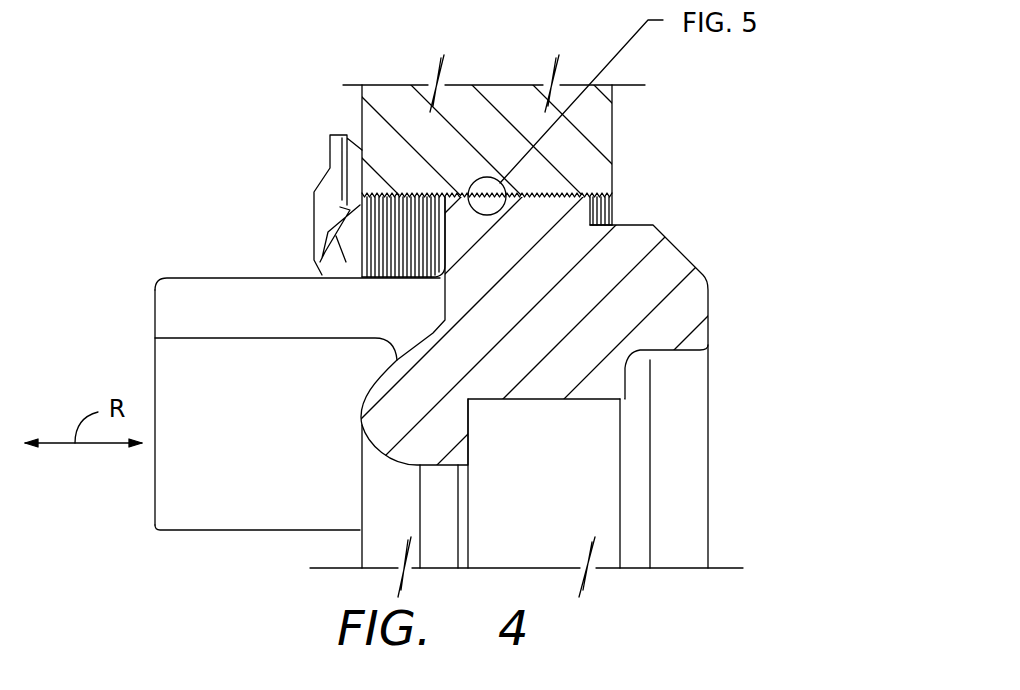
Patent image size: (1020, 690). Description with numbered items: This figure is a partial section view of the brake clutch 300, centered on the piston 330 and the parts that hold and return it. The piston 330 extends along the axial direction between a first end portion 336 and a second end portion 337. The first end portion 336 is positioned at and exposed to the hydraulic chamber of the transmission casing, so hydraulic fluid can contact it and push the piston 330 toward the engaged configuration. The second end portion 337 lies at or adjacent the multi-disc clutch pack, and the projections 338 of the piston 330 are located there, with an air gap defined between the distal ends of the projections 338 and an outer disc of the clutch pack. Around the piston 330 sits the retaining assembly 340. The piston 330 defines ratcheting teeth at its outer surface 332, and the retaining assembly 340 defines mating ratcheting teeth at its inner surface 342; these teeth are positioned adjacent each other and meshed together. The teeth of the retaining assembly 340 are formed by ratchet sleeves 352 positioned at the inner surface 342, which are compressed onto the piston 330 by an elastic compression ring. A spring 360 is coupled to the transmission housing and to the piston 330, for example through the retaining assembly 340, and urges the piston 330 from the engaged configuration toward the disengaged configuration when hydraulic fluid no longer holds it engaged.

The brake clutch 300 is at (187, 128).
The piston 330 is at (665, 267).
The outer surface 332 is at (558, 192).
The first end portion 336 is at (707, 570).
The second end portion 337 is at (156, 540).
The projections 338 is at (228, 297).
The retaining assembly 340 is at (360, 117).
The inner surface 342 is at (393, 197).
The ratchet sleeves 352 is at (470, 102).
The spring 360 is at (312, 207).